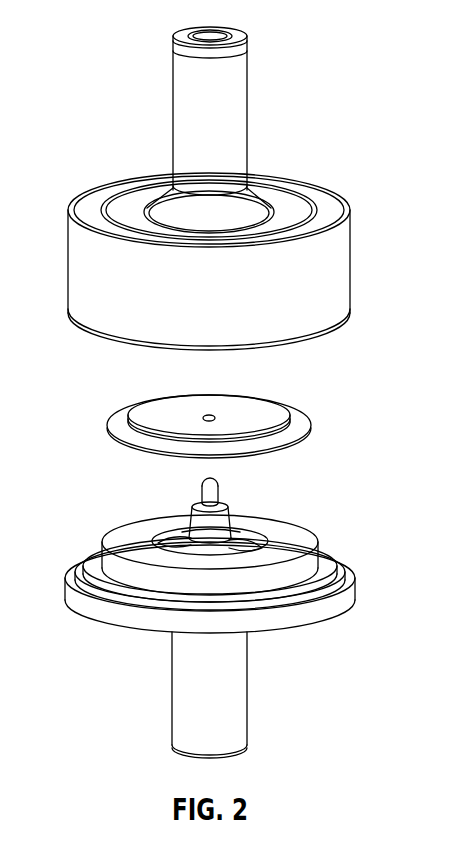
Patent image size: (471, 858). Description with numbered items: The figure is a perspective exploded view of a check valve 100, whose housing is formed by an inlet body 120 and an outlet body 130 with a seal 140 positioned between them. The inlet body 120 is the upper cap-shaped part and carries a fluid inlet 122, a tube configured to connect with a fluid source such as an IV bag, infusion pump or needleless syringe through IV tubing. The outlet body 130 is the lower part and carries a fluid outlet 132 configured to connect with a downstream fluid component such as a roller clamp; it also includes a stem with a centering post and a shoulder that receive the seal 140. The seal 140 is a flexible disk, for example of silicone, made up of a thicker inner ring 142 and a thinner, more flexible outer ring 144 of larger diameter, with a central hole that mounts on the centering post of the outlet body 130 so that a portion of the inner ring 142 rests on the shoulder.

The check valve 100 is at (121, 47).
The inlet body 120 is at (341, 265).
The fluid inlet 122 is at (240, 103).
The outlet body 130 is at (334, 601).
The fluid outlet 132 is at (241, 700).
The seal 140 is at (297, 407).
The inner ring 142 is at (272, 416).
The outer ring 144 is at (294, 444).